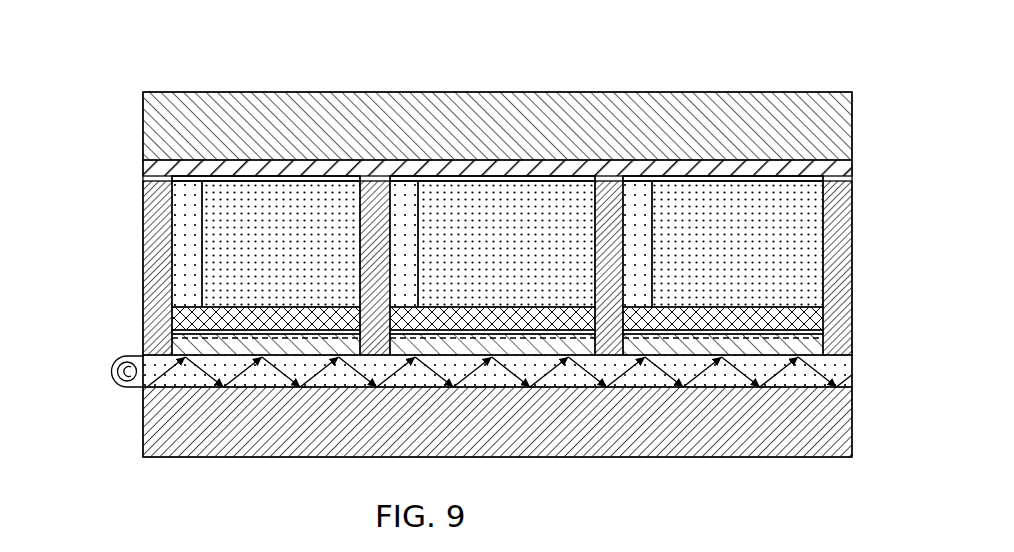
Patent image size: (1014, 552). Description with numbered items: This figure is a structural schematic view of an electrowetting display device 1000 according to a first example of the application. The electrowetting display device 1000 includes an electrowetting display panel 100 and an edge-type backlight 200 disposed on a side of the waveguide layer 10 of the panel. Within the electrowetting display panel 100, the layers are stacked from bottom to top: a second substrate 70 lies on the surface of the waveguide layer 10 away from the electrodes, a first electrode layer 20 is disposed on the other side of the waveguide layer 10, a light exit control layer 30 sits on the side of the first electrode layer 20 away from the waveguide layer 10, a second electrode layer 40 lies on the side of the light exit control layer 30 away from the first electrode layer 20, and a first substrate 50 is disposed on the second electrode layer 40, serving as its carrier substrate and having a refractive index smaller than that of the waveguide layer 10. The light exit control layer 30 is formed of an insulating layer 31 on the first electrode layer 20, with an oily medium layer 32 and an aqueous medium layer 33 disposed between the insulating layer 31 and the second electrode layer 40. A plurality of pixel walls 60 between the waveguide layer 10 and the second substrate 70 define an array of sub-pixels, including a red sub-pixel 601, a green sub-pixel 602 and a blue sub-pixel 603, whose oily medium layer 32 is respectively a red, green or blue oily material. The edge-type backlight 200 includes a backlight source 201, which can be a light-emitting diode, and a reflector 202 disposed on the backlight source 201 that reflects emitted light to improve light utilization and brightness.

The electrowetting display device 1000 is at (470, 236).
The electrowetting display panel 100 is at (535, 256).
The first substrate 50 is at (852, 128).
The second electrode layer 40 is at (852, 168).
The pixel walls 60 is at (852, 212).
The red sub-pixel 601 is at (287, 176).
The green sub-pixel 602 is at (500, 176).
The blue sub-pixel 603 is at (732, 176).
The light exit control layer 30 is at (550, 255).
The aqueous medium layer 33 is at (813, 262).
The oily medium layer 32 is at (642, 292).
The insulating layer 31 is at (535, 318).
The first electrode layer 20 is at (813, 345).
The waveguide layer 10 is at (833, 373).
The second substrate 70 is at (837, 425).
The edge-type backlight 200 is at (78, 373).
The backlight source 201 is at (110, 372).
The reflector 202 is at (115, 364).